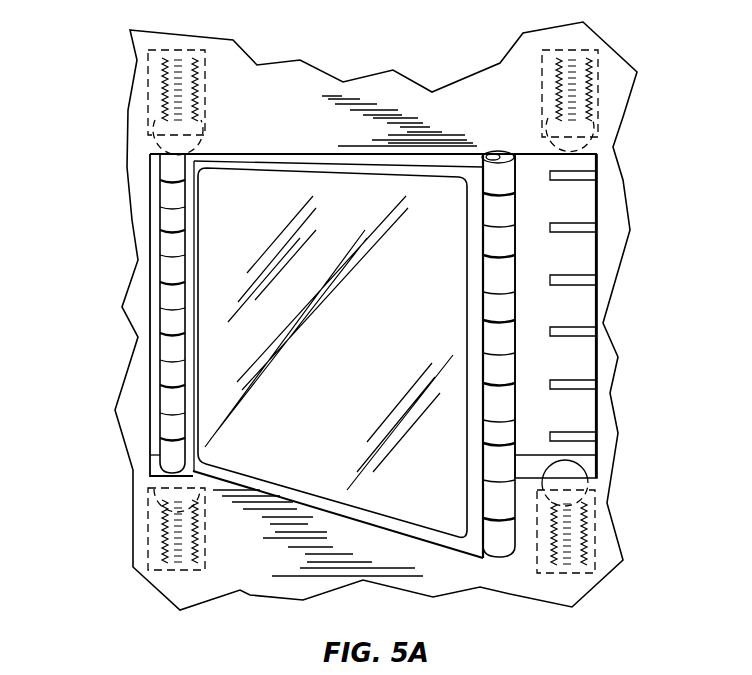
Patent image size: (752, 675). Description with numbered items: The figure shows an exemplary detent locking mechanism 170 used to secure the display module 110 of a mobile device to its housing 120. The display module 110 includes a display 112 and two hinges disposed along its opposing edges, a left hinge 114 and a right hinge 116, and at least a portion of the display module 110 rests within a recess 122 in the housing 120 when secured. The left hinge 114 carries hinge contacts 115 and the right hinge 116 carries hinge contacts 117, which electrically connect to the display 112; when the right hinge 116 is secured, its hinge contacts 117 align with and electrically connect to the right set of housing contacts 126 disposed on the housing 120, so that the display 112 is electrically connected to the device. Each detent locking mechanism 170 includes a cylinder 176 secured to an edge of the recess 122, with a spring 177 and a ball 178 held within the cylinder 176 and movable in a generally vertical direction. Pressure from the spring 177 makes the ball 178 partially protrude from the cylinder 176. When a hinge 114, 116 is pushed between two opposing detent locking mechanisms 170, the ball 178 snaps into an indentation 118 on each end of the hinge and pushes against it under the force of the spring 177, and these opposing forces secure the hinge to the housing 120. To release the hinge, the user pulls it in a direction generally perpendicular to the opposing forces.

The display module 110 is at (393, 535).
The display 112 is at (371, 348).
The left hinge 114 is at (117, 313).
The hinge contacts 115 is at (170, 343).
The right hinge 116 is at (529, 293).
The hinge contacts 117 is at (505, 325).
The indentation 118 is at (490, 152).
The housing 120 is at (300, 577).
The recess 122 is at (604, 318).
The housing contacts 126 is at (570, 383).
The detent locking mechanism 170 is at (213, 84).
The cylinder 176 is at (147, 63).
The spring 177 is at (180, 90).
The ball 178 is at (170, 143).